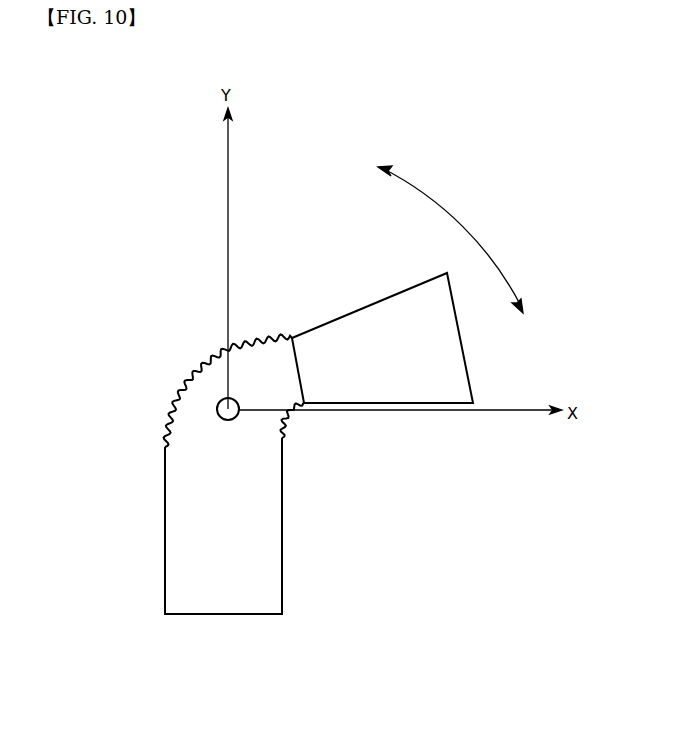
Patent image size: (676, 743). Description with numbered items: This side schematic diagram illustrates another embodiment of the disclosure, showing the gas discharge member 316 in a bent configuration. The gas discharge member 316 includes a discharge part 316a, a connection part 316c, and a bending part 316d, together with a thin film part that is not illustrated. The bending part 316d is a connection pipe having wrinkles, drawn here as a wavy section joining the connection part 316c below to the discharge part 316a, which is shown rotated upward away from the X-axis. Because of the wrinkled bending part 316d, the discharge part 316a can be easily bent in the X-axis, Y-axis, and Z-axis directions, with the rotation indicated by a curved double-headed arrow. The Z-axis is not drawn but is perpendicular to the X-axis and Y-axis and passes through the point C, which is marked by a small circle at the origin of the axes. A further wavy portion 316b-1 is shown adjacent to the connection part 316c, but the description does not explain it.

The gas discharge member 316 is at (192, 312).
The discharge part 316a is at (377, 317).
The connection wavy portion 316b-1 is at (161, 417).
The connection part 316c is at (222, 602).
The bending part 316d is at (210, 380).
The point C is at (217, 408).